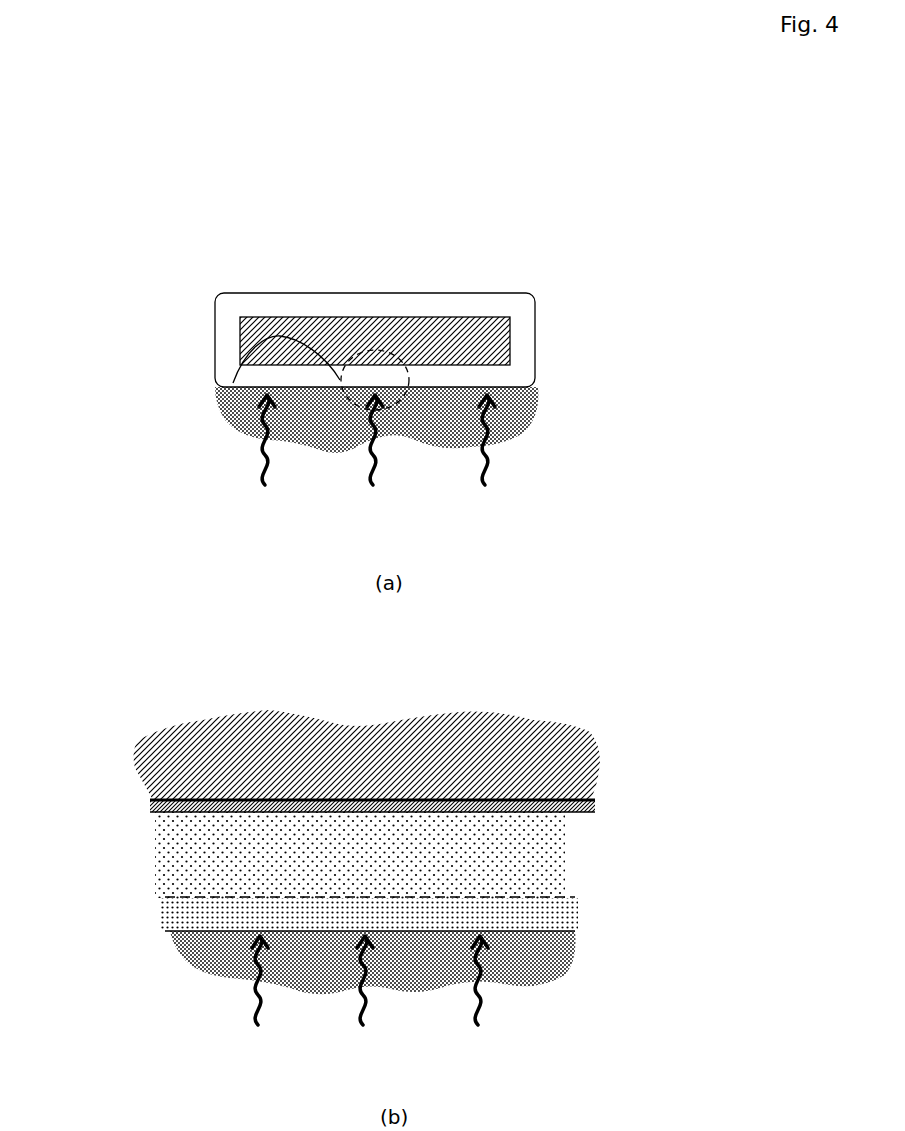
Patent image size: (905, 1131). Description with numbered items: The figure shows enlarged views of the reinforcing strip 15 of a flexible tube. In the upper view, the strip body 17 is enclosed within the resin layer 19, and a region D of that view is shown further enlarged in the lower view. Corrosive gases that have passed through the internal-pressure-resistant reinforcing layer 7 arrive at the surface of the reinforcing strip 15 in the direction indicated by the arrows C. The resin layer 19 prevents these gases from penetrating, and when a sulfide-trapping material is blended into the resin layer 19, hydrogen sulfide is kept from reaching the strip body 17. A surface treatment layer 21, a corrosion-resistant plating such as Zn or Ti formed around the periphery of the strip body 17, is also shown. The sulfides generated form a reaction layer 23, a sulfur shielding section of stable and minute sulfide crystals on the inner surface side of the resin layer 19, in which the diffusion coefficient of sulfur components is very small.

The internal-pressure-resistant reinforcing layer 7 is at (513, 418).
The reinforcing strip 15 is at (403, 278).
The strip body 17 is at (313, 327).
The resin layer 19 is at (518, 338).
The surface treatment layer 21 is at (533, 803).
The reaction layer 23 is at (185, 915).
The arrows C is at (373, 729).
The region D is at (218, 388).